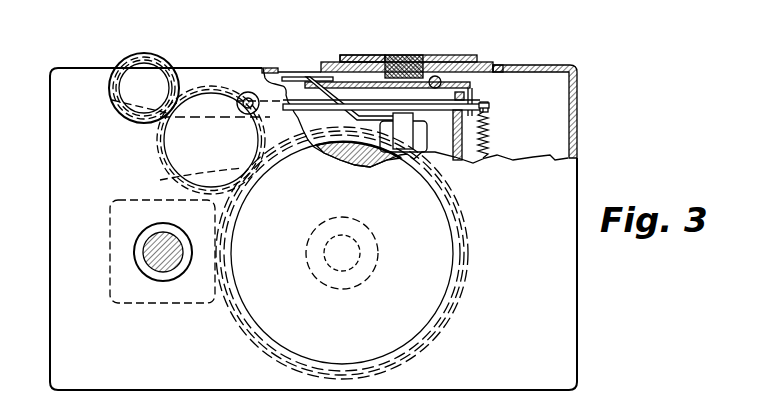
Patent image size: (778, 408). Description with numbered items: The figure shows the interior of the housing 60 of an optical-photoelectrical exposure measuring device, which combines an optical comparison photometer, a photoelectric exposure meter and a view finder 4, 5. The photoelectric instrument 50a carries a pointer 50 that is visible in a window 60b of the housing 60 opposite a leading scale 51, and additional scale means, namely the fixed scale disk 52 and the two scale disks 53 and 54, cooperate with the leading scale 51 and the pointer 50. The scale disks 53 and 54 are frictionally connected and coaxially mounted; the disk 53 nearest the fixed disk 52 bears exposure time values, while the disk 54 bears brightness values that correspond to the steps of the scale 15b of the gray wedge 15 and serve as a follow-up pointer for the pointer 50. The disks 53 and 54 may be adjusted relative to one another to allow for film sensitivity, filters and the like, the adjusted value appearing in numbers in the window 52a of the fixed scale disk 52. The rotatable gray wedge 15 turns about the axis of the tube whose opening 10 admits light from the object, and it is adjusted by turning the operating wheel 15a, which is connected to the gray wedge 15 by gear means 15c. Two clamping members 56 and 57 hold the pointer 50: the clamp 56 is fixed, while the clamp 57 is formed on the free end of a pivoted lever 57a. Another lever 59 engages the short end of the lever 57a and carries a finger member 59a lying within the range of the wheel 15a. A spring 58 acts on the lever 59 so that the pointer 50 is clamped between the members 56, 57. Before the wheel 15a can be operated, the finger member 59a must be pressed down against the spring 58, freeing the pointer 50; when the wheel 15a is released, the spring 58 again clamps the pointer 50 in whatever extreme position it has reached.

The view finder 4 is at (110, 232).
The view finder 5 is at (146, 254).
The opening 10 is at (358, 255).
The gray wedge 15 is at (349, 155).
The operating wheel 15a is at (110, 97).
The scale 15b is at (455, 238).
The gear means 15c is at (159, 179).
The pointer 50 is at (245, 92).
The instrument 50a is at (407, 133).
The leading scale 51 is at (307, 74).
The fixed scale disk 52 is at (455, 55).
The window 52a is at (478, 55).
The scale disk 53 is at (353, 55).
The scale disk 54 is at (339, 55).
The clamping member 56 is at (311, 79).
The clamping member 57 is at (307, 130).
The pivoted lever 57a is at (395, 83).
The spring 58 is at (490, 128).
The lever 59 is at (205, 116).
The finger member 59a is at (135, 52).
The housing 60 is at (557, 297).
The window 60b is at (263, 70).